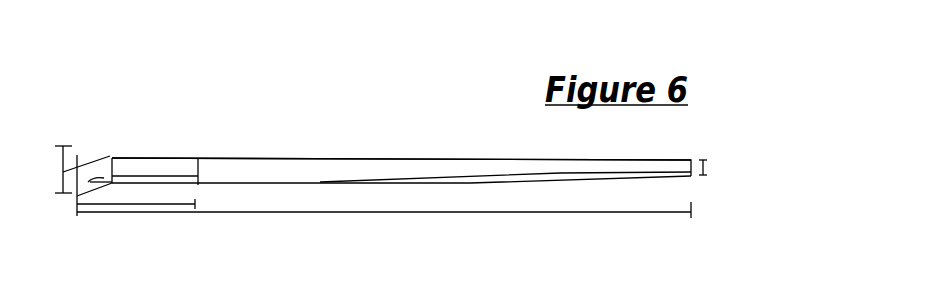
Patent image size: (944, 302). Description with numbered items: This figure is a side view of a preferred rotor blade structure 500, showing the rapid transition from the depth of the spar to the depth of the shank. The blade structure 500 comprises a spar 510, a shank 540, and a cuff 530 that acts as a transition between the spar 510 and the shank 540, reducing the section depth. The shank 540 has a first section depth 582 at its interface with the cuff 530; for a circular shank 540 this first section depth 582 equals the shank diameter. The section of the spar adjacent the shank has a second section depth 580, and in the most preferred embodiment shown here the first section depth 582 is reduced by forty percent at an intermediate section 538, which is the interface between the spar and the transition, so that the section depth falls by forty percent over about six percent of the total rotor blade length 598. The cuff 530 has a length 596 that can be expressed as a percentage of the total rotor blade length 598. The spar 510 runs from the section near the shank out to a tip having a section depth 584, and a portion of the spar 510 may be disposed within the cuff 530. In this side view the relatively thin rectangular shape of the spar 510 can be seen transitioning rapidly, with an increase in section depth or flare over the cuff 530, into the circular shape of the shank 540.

The blade structure 500 is at (452, 125).
The spar 510 is at (457, 182).
The cuff 530 is at (158, 158).
The intermediate section 538 is at (112, 183).
The shank 540 is at (77, 155).
The second section depth 580 is at (198, 184).
The first section depth 582 is at (83, 160).
The section depth of the tip 584 is at (707, 166).
The cuff length 596 is at (122, 205).
The total rotor blade length 598 is at (380, 213).